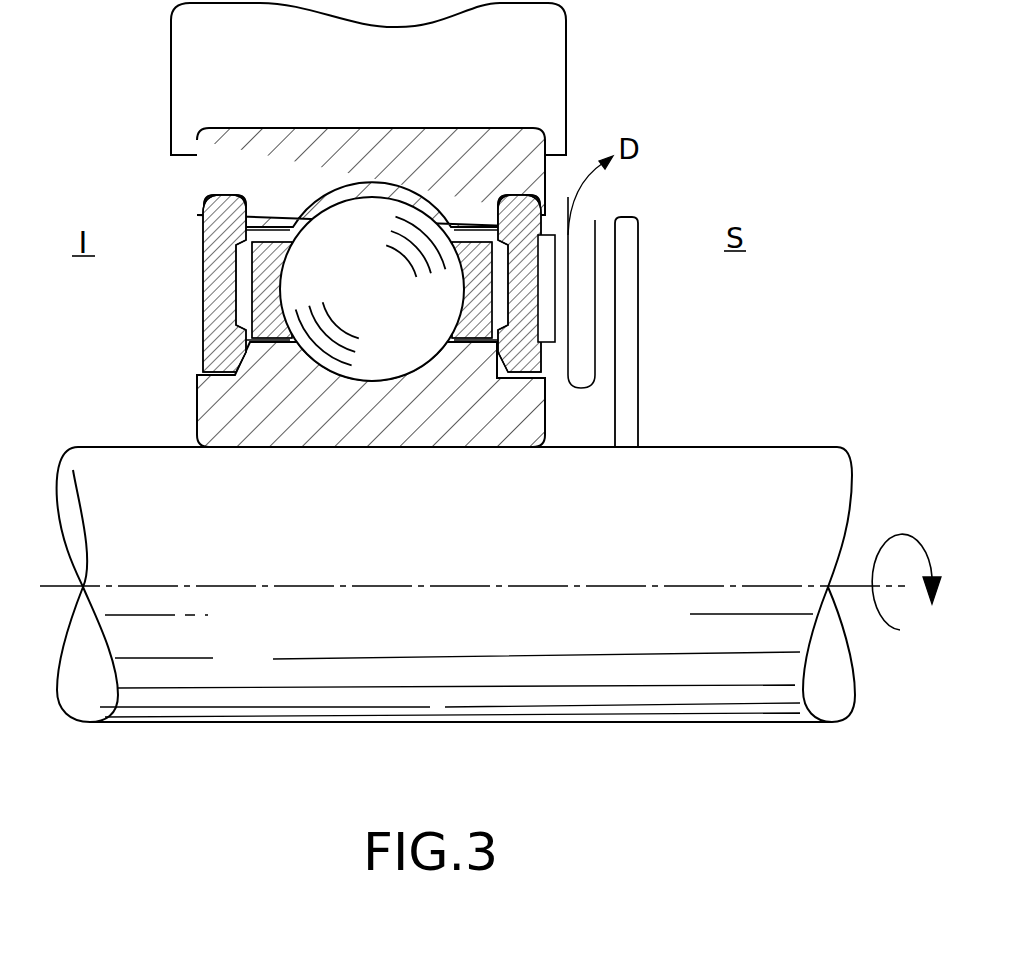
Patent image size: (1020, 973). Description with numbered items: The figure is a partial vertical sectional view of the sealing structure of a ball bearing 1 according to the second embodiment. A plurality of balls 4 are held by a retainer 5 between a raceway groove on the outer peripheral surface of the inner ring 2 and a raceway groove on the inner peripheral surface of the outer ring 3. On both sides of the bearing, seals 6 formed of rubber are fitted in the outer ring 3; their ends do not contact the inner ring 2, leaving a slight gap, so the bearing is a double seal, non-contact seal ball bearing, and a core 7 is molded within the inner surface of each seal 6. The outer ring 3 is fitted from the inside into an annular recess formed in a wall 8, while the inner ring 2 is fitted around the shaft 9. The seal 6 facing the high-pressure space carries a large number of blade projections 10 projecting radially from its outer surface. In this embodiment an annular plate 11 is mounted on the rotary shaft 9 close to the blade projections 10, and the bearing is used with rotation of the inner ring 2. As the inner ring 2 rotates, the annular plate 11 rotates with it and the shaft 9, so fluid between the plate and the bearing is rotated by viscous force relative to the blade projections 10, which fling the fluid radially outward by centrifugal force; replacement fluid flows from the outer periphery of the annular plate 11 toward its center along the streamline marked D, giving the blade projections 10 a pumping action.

The ball bearing 1 is at (422, 296).
The inner ring 2 is at (200, 402).
The outer ring 3 is at (215, 188).
The balls 4 is at (370, 355).
The retainer 5 is at (230, 328).
The seal 6 is at (200, 276).
The core 7 is at (250, 235).
The wall 8 is at (188, 80).
The shaft 9 is at (440, 688).
The blade projections 10 is at (555, 318).
The annular plate 11 is at (627, 383).